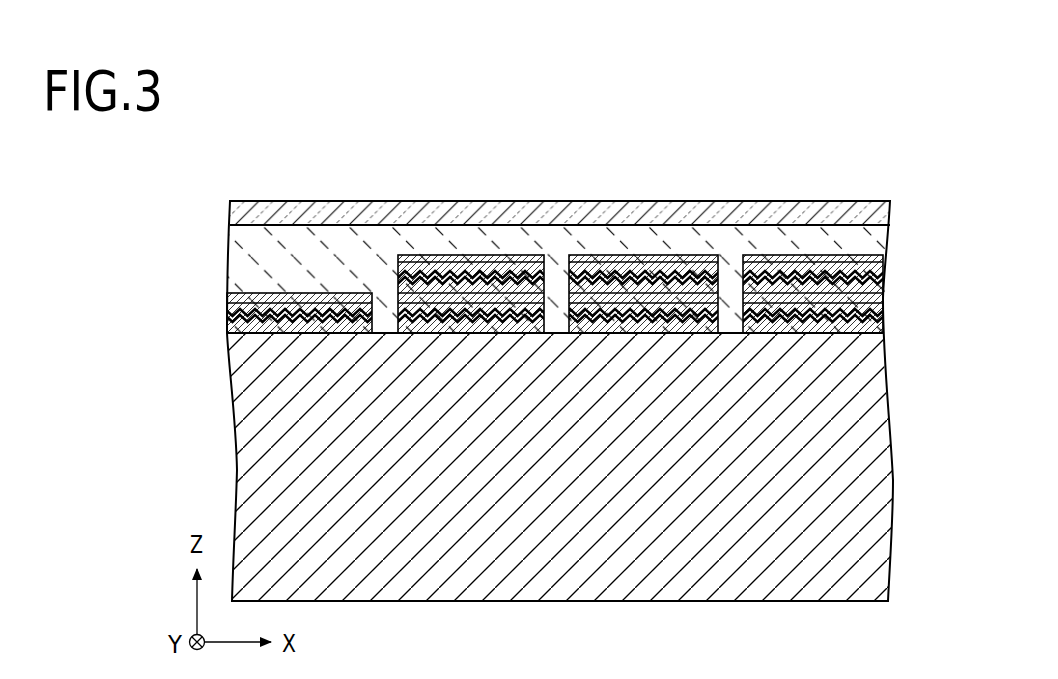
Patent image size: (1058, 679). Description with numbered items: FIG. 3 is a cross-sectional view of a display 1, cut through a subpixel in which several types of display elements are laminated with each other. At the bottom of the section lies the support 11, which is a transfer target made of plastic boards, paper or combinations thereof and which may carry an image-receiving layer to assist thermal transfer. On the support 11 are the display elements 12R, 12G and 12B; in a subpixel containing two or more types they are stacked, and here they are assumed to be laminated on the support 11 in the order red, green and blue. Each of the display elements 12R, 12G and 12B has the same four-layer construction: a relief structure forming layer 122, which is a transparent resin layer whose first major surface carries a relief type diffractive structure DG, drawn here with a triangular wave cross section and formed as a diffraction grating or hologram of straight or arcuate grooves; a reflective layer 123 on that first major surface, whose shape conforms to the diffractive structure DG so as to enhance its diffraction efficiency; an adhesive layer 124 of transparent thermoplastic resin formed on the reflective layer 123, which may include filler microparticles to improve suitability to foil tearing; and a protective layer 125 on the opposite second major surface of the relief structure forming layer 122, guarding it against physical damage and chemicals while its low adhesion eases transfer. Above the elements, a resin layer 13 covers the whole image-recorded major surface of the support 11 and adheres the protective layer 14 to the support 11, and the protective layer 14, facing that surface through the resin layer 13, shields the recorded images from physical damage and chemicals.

The display 1 is at (895, 174).
The support 11 is at (875, 414).
The display element 12G is at (591, 243).
The display element 12B is at (462, 242).
The display element 12R is at (565, 292).
The relief structure forming layer 122 is at (447, 258).
The reflective layer 123 is at (857, 312).
The adhesive layer 124 is at (855, 336).
The protective layer 125 is at (622, 262).
The diffractive structure DG is at (662, 264).
The resin layer 13 is at (247, 260).
The protective layer 14 is at (245, 210).